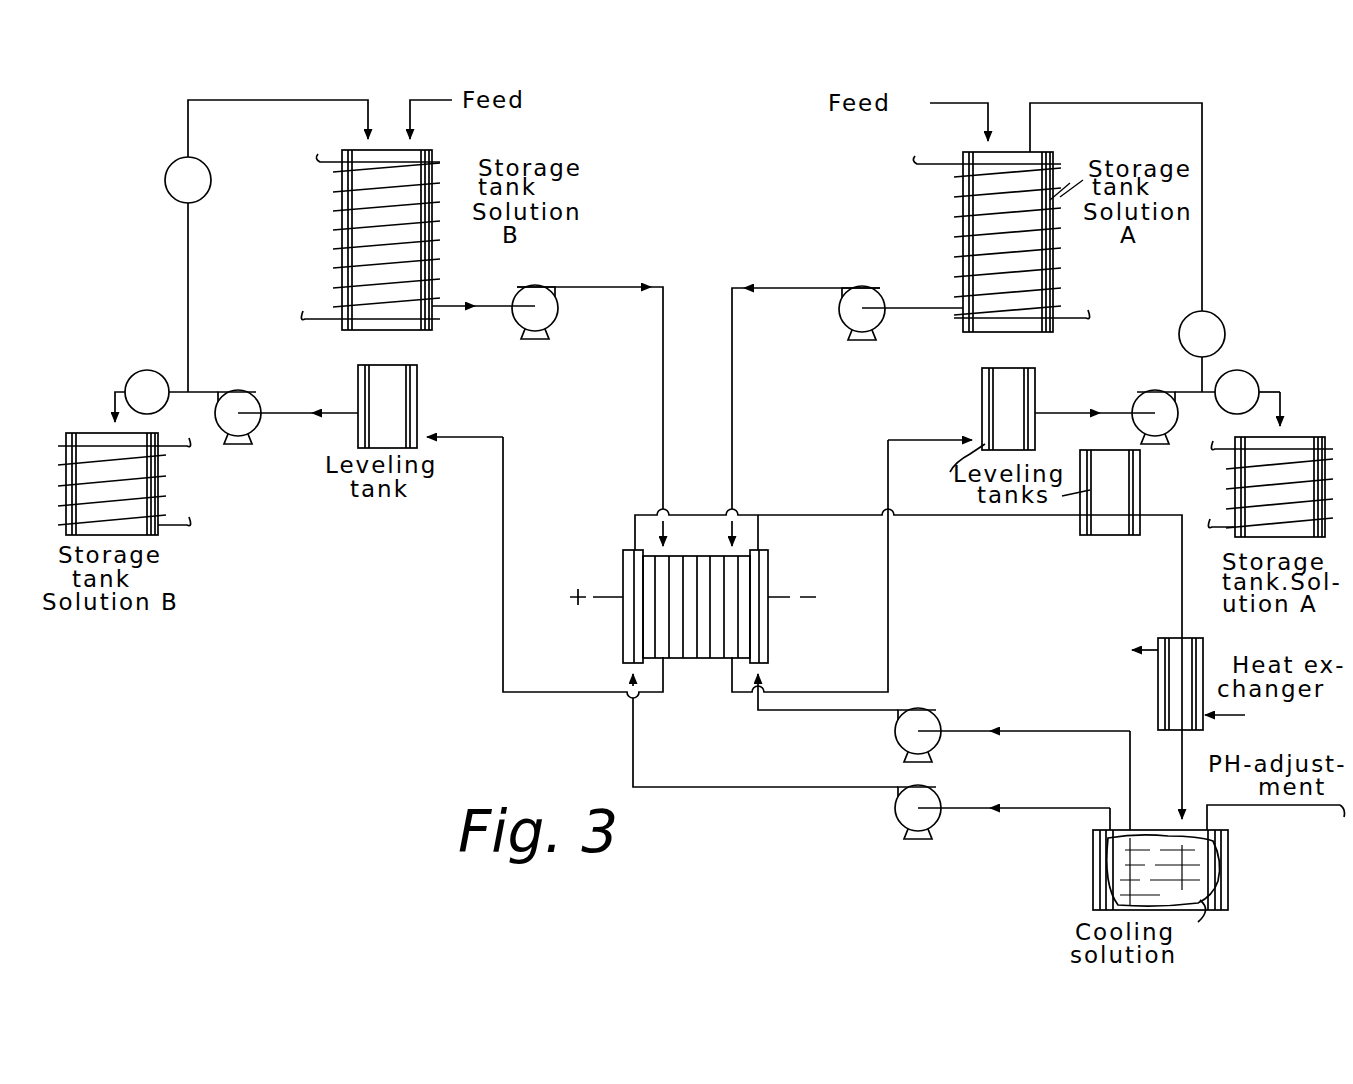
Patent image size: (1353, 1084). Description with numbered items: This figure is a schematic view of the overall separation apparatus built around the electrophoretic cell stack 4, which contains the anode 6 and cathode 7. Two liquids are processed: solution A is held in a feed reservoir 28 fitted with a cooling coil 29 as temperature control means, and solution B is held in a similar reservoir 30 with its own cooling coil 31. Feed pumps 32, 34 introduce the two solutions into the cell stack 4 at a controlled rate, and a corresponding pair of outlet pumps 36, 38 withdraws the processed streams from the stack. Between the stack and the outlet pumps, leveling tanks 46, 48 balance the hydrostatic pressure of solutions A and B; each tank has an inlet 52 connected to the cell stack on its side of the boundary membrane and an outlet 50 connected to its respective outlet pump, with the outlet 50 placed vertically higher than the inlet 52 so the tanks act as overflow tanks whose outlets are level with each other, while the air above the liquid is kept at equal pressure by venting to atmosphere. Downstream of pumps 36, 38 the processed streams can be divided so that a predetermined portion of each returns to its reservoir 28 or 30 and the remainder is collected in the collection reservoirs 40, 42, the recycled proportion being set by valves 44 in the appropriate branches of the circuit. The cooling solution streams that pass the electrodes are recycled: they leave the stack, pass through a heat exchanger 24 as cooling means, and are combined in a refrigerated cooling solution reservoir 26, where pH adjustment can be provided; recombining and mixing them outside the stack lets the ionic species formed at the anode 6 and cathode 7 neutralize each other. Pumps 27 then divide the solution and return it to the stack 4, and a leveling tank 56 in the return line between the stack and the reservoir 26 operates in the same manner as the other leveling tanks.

The electrophoretic stack 4 is at (705, 658).
The anode 6 is at (622, 620).
The cathode 7 is at (770, 620).
The heat exchanger 24 is at (1158, 670).
The cooling solution reservoir 26 is at (1225, 864).
The pumps 27 is at (935, 742).
The feed reservoir 28 is at (960, 204).
The cooling coil 29 is at (1080, 312).
The reservoir 30 is at (338, 200).
The cooling coil 31 is at (322, 308).
The feed pump 32 is at (845, 318).
The feed pump 34 is at (555, 318).
The outlet pump 36 is at (1150, 402).
The outlet pump 38 is at (255, 396).
The collection reservoir 40 is at (1240, 469).
The collection reservoir 42 is at (158, 492).
The valves 44 is at (173, 163).
The leveling tank 46 is at (995, 386).
The leveling tank 48 is at (400, 398).
The outlet 50 is at (325, 419).
The inlet 52 is at (437, 436).
The leveling tank 56 is at (1098, 535).